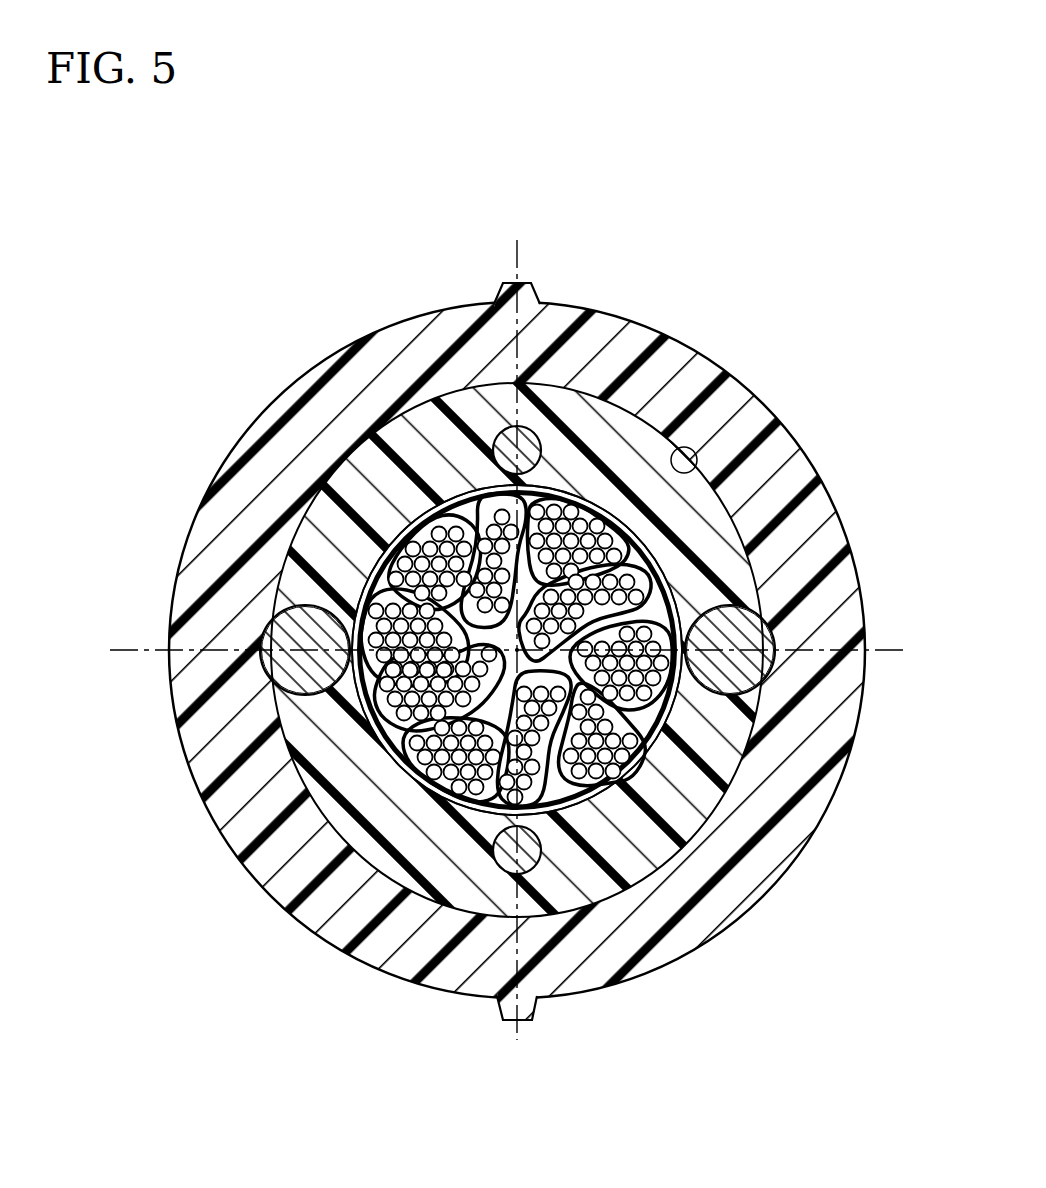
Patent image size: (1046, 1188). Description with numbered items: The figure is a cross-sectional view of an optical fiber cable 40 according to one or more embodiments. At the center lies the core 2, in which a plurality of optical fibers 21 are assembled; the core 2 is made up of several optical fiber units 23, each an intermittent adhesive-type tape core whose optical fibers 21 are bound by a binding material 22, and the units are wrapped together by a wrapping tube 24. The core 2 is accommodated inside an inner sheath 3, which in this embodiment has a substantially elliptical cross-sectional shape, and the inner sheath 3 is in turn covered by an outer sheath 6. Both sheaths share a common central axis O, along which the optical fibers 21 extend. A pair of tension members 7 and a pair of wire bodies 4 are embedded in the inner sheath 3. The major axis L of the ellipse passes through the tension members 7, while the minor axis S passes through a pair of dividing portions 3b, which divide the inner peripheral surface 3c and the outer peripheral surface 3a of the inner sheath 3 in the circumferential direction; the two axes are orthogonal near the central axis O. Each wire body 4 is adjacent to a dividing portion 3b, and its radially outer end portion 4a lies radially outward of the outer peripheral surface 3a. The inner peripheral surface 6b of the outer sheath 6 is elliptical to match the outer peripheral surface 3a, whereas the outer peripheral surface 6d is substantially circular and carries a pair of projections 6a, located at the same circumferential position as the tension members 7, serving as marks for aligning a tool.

The optical fiber cable 40 is at (200, 230).
The core 2 is at (655, 561).
The inner sheath 3 is at (720, 765).
The outer peripheral surface of the inner sheath 3a is at (768, 528).
The dividing portion 3b is at (738, 608).
The inner peripheral surface of the inner sheath 3c is at (405, 763).
The wire body 4 is at (733, 690).
The radially outer end portion of the wire body 4a is at (742, 688).
The outer sheath 6 is at (396, 366).
The projection 6a is at (505, 290).
The inner peripheral surface of the outer sheath 6b is at (697, 469).
The outer peripheral surface of the outer sheath 6d is at (663, 337).
The tension member 7 is at (527, 438).
The optical fiber 21 is at (466, 794).
The binding material 22 is at (487, 802).
The optical fiber unit 23 is at (507, 813).
The wrapping tube 24 is at (580, 806).
The major axis L is at (522, 246).
The minor axis S is at (908, 648).
The central axis O is at (517, 650).